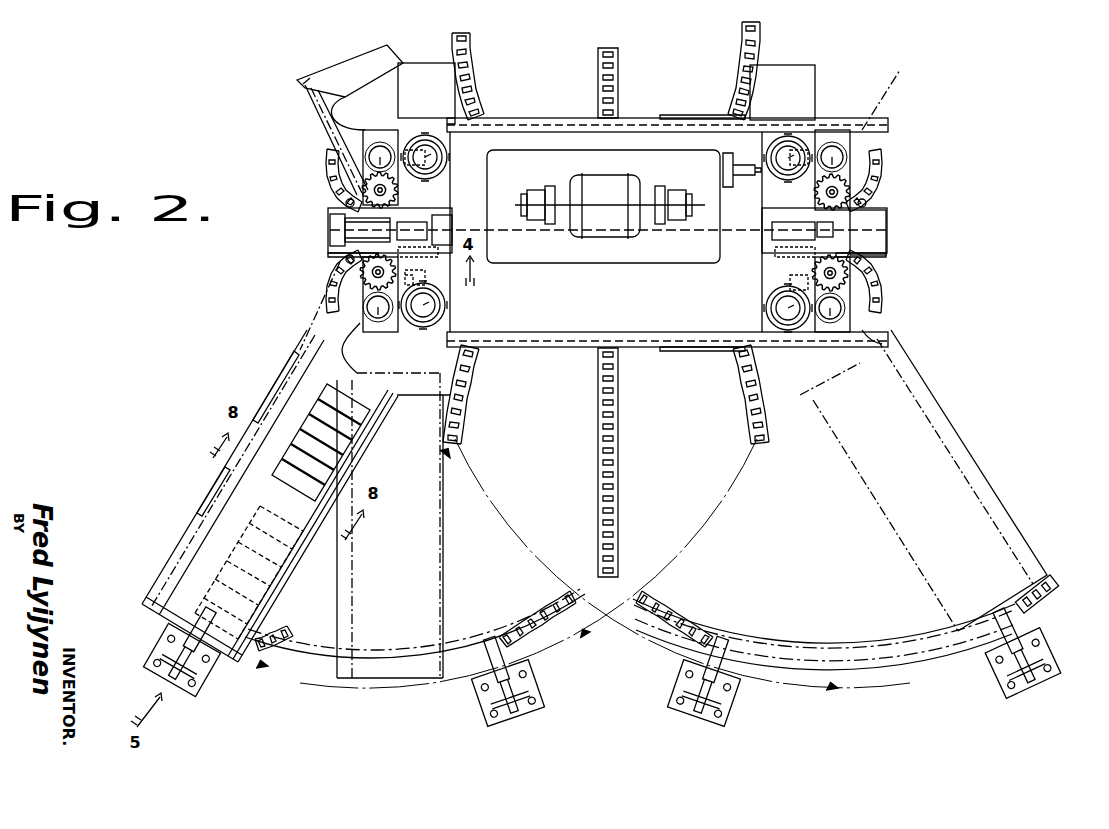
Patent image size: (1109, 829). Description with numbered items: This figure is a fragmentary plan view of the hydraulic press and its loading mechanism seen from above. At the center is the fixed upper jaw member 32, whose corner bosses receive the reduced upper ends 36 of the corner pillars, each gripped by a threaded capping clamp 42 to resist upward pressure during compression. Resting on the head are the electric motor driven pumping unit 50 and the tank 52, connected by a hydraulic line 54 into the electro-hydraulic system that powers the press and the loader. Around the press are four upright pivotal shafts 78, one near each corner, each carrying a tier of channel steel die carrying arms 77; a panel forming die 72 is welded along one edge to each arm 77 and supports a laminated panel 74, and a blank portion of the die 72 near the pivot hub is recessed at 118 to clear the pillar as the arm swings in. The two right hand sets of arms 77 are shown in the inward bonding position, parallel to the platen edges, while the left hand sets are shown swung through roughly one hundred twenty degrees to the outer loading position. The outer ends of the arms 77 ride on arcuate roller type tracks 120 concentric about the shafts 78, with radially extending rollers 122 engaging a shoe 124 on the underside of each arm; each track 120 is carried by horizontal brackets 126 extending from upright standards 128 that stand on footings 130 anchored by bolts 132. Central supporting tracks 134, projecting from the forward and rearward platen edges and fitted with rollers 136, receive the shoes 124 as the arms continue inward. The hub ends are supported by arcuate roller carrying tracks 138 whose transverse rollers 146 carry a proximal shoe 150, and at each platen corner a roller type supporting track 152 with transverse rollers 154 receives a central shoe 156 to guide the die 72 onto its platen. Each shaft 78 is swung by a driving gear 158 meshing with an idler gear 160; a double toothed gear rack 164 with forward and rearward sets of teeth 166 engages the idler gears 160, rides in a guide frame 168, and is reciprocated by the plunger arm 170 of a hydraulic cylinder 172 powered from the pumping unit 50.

The upper jaw member 32 is at (588, 309).
The upper ends of pillars 36 is at (447, 159).
The capping clamp 42 is at (427, 134).
The pumping unit 50 is at (592, 211).
The tank 52 is at (600, 258).
The hydraulic line 54 is at (753, 185).
The panel forming die 72 is at (402, 62).
The panel 74 is at (305, 94).
The die carrying arm 77 is at (330, 134).
The pivotal shaft 78 is at (385, 152).
The recess 118 is at (342, 120).
The roller type track 120 is at (303, 654).
The roller 122 is at (279, 642).
The shoe 124 is at (546, 118).
The horizontal bracket 126 is at (516, 654).
The upright standard 128 is at (508, 716).
The footing 130 is at (482, 716).
The bolt 132 is at (538, 680).
The central supporting track 134 is at (618, 77).
The roller 136 is at (614, 88).
The arcuate roller carrying track 138 is at (343, 192).
The transverse roller 146 is at (344, 200).
The proximal shoe 150 is at (343, 265).
The roller type supporting track 152 is at (475, 85).
The transverse roller 154 is at (470, 52).
The central shoe 156 is at (687, 116).
The driving gear 158 is at (385, 146).
The idler gear 160 is at (365, 188).
The gear rack 164 is at (345, 240).
The teeth 166 is at (328, 212).
The guide frame 168 is at (328, 254).
The plunger arm 170 is at (330, 222).
The hydraulic cylinder 172 is at (606, 230).